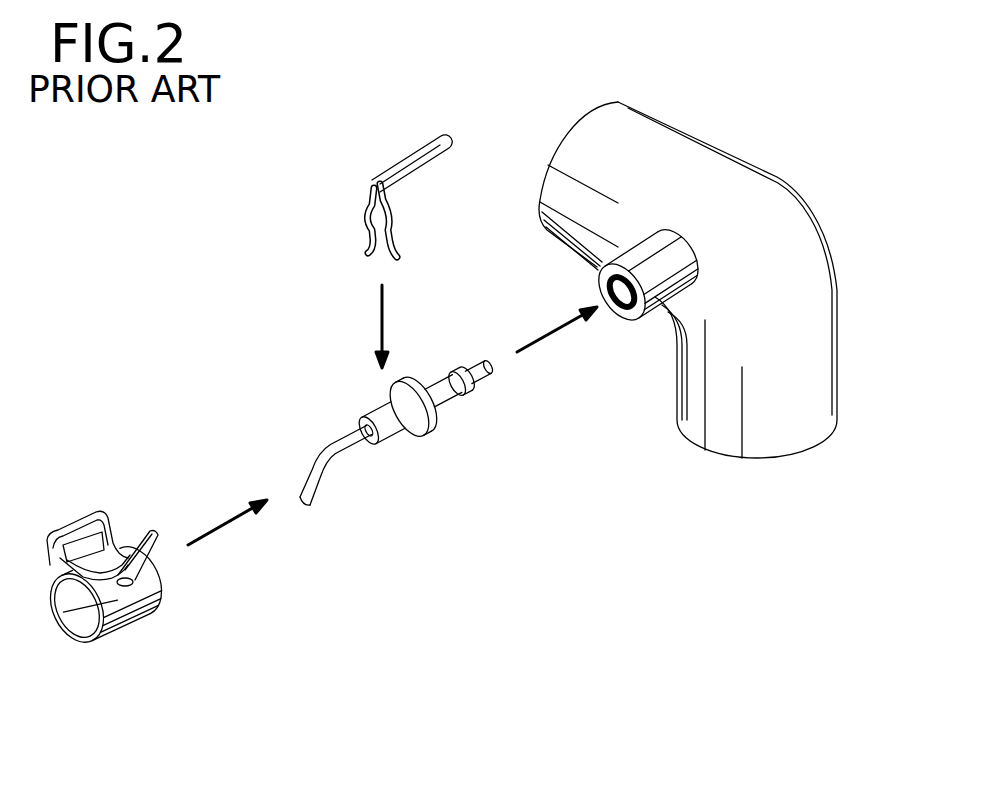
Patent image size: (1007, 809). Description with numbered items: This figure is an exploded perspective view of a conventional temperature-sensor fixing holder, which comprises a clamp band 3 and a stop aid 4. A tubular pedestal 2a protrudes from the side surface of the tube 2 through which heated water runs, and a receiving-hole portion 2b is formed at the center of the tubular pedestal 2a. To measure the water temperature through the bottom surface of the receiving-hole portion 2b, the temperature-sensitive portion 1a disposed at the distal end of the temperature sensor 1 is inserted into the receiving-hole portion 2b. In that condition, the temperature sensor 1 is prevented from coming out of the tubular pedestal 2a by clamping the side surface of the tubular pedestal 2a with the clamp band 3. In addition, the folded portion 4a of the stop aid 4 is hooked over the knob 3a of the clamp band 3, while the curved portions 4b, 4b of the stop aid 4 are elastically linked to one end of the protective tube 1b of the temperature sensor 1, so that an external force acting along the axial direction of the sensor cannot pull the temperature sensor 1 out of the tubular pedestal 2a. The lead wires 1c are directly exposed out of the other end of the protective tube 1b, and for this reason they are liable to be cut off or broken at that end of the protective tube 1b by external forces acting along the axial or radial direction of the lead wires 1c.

The temperature sensor 1 is at (449, 438).
The temperature-sensitive portion 1a is at (480, 377).
The protective tube 1b is at (403, 433).
The lead wires 1c is at (327, 497).
The tube 2 is at (781, 170).
The tubular pedestal 2a is at (648, 253).
The receiving-hole portion 2b is at (627, 297).
The clamp band 3 is at (138, 634).
The knob 3a is at (90, 517).
The stop aid 4 is at (362, 175).
The folded portion 4a is at (420, 143).
The curved portions 4b is at (368, 218).